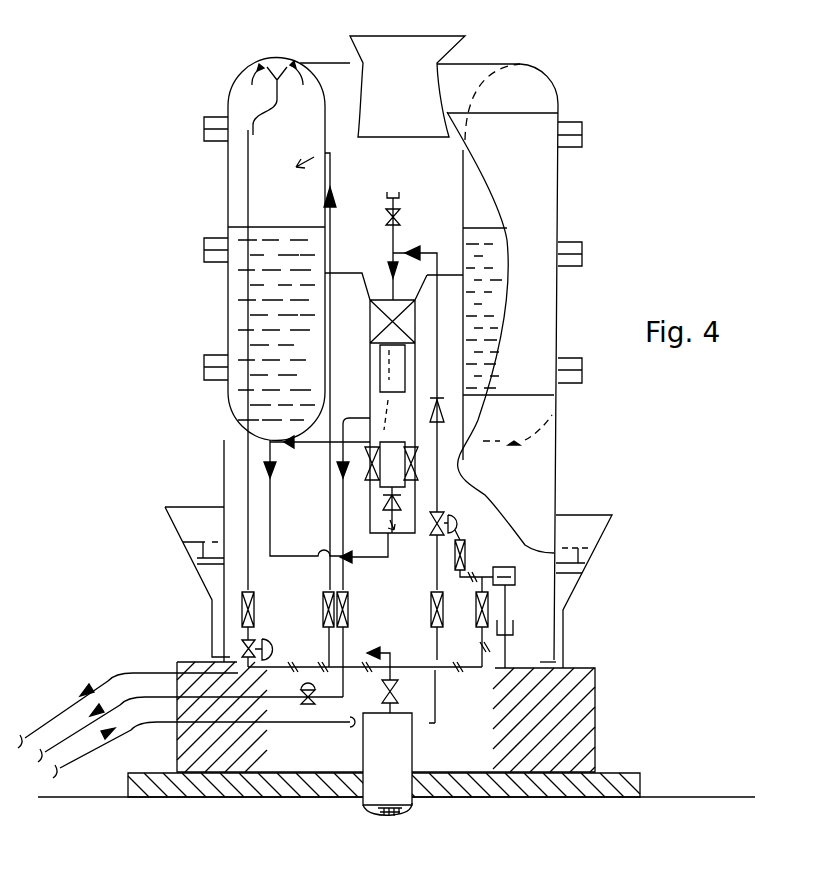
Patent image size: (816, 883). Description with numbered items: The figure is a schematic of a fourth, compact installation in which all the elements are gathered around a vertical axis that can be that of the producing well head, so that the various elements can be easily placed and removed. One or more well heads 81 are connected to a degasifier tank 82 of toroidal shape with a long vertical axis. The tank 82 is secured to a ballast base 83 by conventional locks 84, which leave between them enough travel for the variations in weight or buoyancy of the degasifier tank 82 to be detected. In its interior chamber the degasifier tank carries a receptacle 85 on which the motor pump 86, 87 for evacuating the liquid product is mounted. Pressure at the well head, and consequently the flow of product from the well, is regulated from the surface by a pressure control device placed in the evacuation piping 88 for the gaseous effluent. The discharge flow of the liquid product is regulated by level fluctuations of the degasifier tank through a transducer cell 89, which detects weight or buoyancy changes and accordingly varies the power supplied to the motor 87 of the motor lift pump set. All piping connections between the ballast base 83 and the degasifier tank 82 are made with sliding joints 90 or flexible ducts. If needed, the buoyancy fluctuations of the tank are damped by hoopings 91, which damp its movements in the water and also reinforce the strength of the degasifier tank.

The well head 81 is at (412, 754).
The degasifier tank 82 is at (227, 177).
The ballast base 83 is at (580, 690).
The locks 84 is at (563, 613).
The receptacle 85 is at (415, 500).
The pump 86 is at (418, 463).
The motor 87 is at (400, 372).
The evacuation piping 88 is at (107, 672).
The transducer cell 89 is at (516, 578).
The sliding joints 90 is at (245, 592).
The hoopings 91 is at (582, 370).